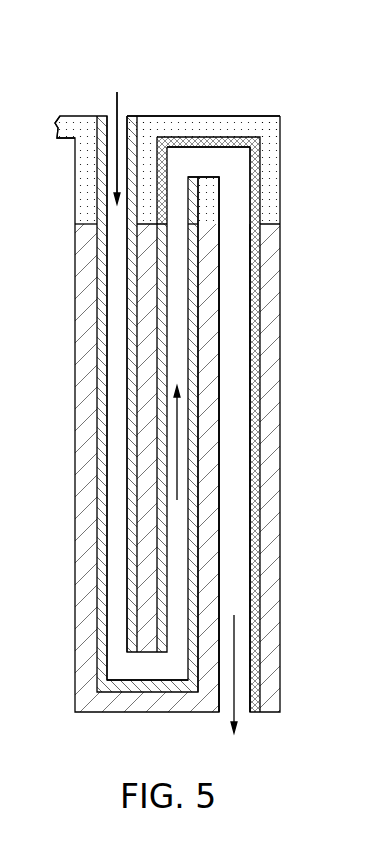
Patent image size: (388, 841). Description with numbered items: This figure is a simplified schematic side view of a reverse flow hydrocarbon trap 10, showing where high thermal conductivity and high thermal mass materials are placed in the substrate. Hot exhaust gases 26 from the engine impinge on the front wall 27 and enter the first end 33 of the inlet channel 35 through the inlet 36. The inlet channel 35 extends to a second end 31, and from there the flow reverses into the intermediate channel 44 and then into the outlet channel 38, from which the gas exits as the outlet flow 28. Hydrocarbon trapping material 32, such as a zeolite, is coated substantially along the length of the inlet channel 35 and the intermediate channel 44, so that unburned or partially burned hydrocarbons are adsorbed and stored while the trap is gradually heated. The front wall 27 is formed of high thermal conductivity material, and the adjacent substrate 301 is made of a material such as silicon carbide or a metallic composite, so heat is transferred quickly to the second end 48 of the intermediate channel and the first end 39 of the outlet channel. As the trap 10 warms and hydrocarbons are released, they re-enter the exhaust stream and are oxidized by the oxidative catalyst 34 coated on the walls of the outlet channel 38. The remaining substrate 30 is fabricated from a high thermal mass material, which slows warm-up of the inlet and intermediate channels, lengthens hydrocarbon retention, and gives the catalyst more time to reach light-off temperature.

The trap 10 is at (176, 97).
The hot exhaust gases 26 is at (116, 100).
The front wall 27 is at (243, 117).
The outlet gas flow 28 is at (235, 705).
The substrate 30 is at (108, 706).
The second end 31 is at (118, 666).
The hydrocarbon trapping material 32 is at (102, 412).
The first end 33 is at (111, 121).
The oxidative catalyst 34 is at (253, 242).
The inlet channel 35 is at (117, 443).
The inlet 36 is at (121, 112).
The outlet channel 38 is at (238, 372).
The first end of the outlet channel 39 is at (240, 165).
The intermediate channel 44 is at (178, 534).
The second end of the intermediate channel 48 is at (180, 162).
The substrate 301 is at (270, 183).